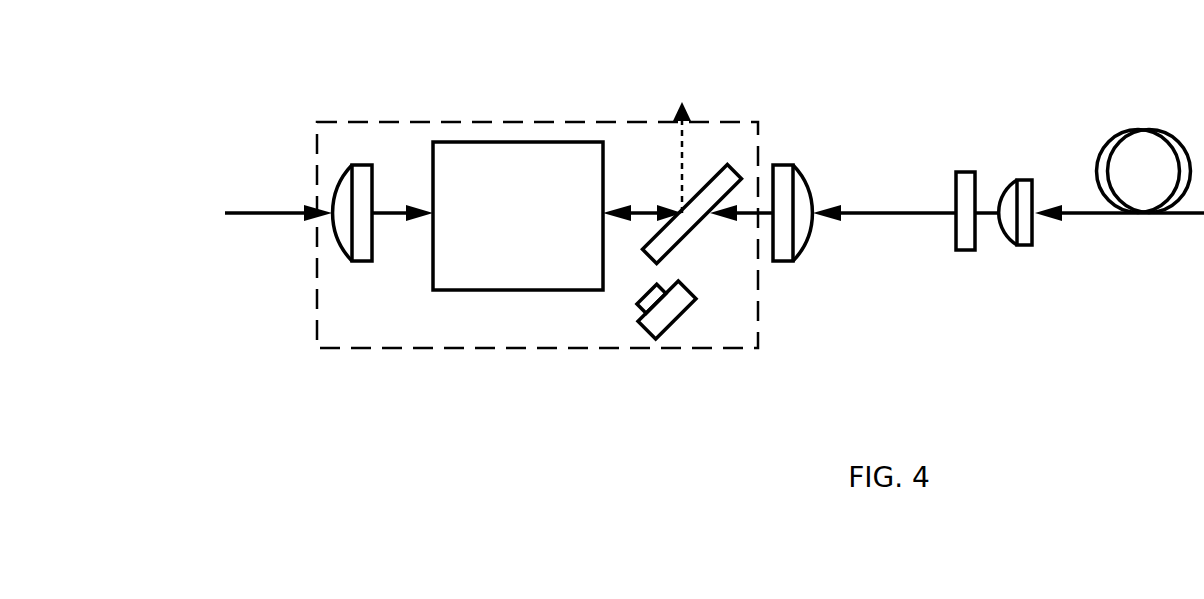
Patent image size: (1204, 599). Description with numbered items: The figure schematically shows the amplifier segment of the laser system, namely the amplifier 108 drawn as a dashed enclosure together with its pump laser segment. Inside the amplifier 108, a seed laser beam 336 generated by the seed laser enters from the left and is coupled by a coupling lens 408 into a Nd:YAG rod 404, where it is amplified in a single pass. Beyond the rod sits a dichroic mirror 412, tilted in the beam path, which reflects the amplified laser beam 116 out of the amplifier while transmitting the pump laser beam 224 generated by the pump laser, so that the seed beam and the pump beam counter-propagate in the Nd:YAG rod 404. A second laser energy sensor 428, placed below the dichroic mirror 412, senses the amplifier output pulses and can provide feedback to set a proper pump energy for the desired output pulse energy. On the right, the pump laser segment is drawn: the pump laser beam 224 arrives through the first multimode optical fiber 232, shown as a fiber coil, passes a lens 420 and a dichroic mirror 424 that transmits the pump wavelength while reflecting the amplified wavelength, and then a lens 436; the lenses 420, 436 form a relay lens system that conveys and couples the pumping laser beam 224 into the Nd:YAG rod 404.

The amplifier 108 is at (583, 348).
The laser beam 116 is at (642, 208).
The pump laser beam 224 is at (862, 217).
The first multimode optical fiber 232 is at (1143, 130).
The seed laser beam 336 is at (250, 217).
The Nd:YAG rod 404 is at (540, 230).
The coupling lens 408 is at (352, 165).
The dichroic mirror 412 is at (727, 164).
The lens 420 is at (1023, 248).
The dichroic mirror 424 is at (957, 170).
The second laser energy sensor 428 is at (673, 325).
The lens 436 is at (795, 262).